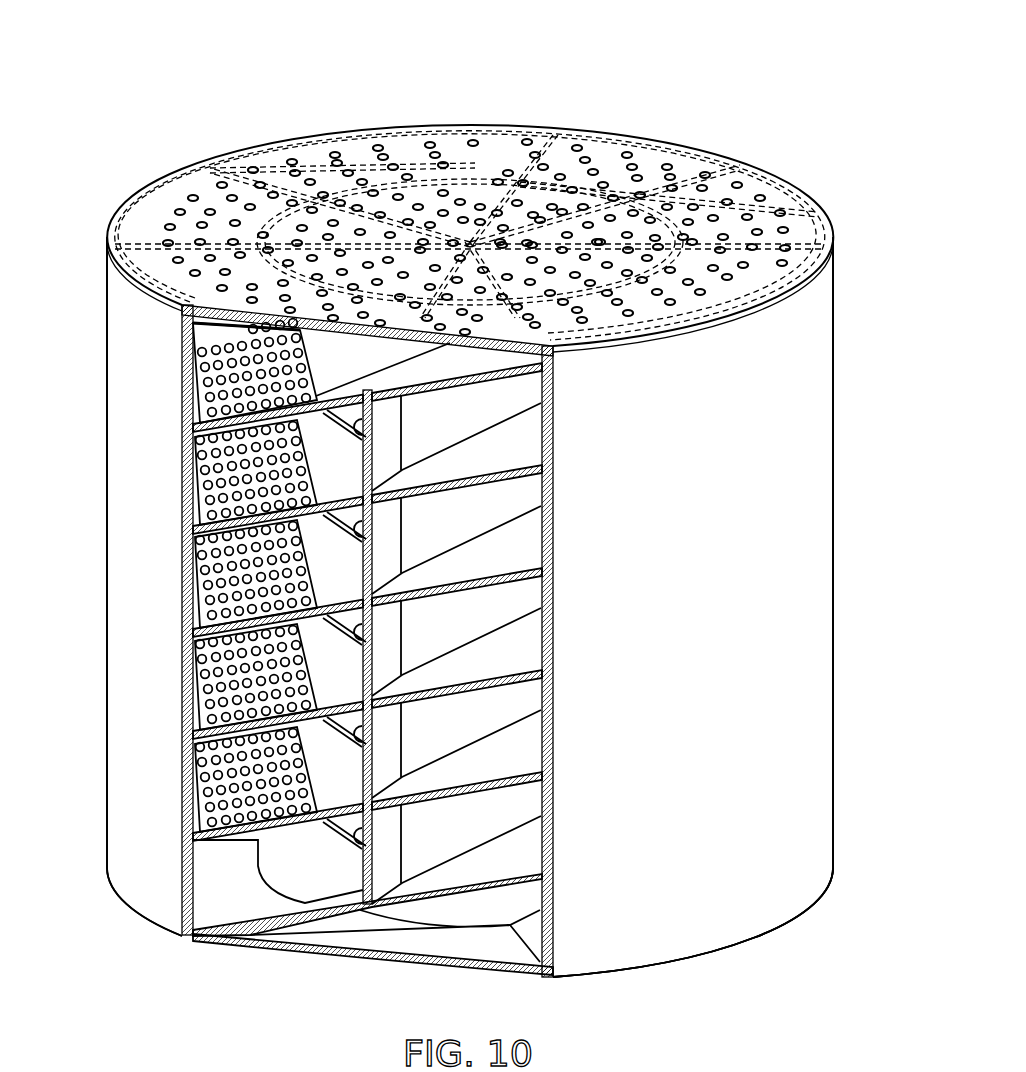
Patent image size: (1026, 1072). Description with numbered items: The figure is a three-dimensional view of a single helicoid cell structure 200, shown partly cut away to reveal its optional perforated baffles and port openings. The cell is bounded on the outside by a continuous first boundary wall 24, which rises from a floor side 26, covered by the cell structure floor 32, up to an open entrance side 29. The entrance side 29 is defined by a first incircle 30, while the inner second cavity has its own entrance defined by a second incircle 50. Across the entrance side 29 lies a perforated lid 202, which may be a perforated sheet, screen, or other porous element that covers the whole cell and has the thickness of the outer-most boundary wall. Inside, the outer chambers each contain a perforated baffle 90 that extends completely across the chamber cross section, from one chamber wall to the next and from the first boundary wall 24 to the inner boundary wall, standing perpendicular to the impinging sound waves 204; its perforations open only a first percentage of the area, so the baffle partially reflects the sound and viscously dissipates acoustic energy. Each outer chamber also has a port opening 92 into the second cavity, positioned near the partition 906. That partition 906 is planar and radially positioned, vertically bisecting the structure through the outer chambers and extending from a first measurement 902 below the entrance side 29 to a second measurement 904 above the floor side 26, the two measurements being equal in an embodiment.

The helicoid cell structure 200 is at (165, 50).
The perforated lid 202 is at (352, 150).
The second incircle 50 is at (490, 186).
The first incircle 30 is at (789, 182).
The entrance side 29 is at (518, 558).
The first boundary wall 24 is at (836, 549).
The floor side 26 is at (476, 948).
The cell structure floor 32 is at (637, 987).
The perforated baffle 90 is at (205, 416).
The port opening 92 is at (373, 431).
The impinging sound waves 204 is at (213, 778).
The partition 906 is at (366, 870).
The first measurement 902 is at (182, 400).
The second measurement 904 is at (884, 900).